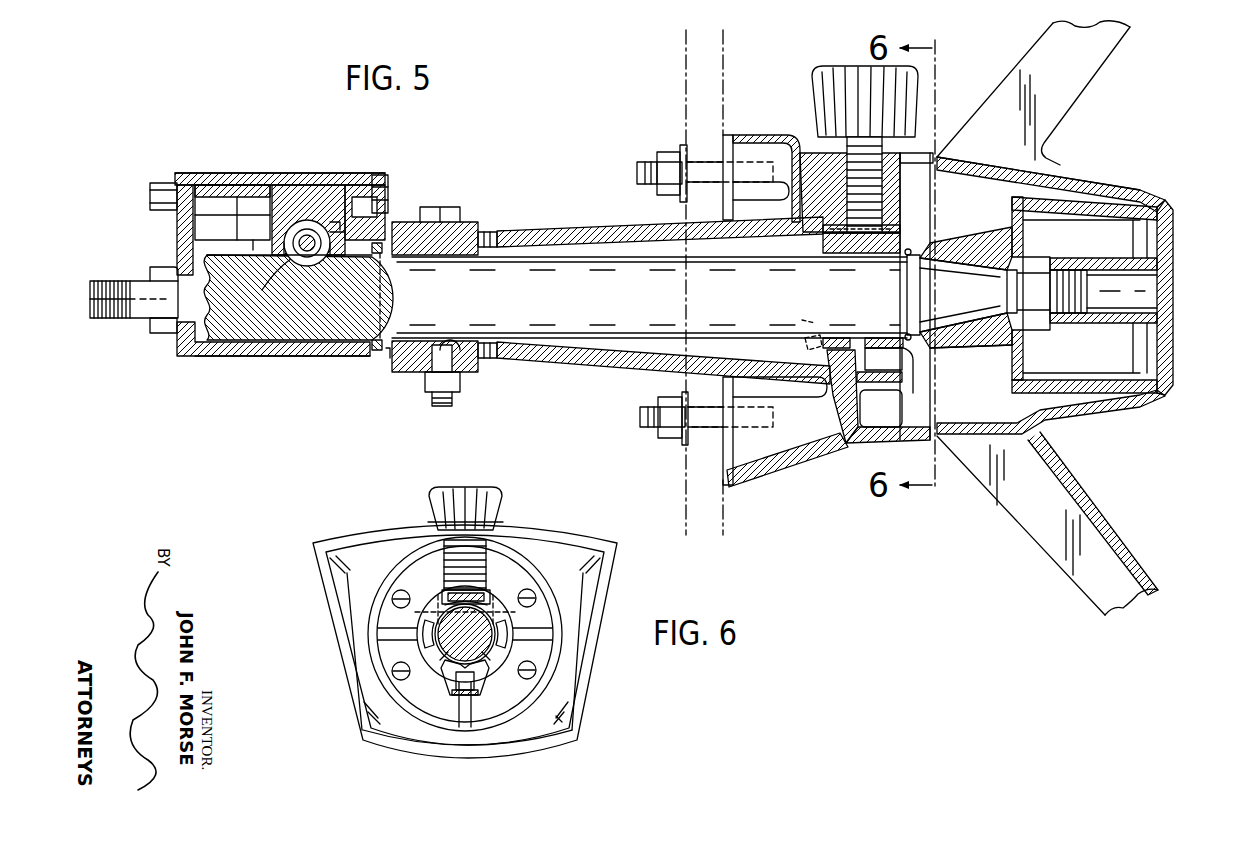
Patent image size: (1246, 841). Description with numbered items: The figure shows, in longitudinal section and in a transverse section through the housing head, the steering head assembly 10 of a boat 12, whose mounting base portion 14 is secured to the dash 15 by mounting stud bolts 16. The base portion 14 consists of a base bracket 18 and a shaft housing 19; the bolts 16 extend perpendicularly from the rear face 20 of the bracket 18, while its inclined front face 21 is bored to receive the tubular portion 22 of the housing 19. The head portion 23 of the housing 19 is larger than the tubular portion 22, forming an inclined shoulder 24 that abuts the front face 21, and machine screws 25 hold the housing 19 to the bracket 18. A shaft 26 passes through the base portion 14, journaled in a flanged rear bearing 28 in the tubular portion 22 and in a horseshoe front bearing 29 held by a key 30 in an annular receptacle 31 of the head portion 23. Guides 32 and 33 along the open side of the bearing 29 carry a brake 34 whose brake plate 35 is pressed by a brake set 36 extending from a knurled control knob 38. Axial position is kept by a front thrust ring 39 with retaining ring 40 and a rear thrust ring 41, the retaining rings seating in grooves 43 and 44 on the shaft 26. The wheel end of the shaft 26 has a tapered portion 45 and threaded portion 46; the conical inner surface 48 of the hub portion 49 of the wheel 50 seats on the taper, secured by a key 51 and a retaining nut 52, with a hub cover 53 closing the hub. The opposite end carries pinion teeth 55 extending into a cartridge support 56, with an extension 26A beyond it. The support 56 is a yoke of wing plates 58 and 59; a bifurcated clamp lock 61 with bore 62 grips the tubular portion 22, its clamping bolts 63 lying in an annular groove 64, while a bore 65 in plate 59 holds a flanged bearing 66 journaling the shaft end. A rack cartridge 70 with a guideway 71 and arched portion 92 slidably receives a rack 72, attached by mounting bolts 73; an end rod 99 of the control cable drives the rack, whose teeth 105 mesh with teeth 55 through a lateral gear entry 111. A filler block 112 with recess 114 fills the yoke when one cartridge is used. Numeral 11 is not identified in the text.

In FIG. 5, the steering head assembly 10 is at (1178, 98).
In FIG. 5, the steering/throttle housing 11 is at (176, 127).
In FIG. 5, the boat 12 is at (680, 57).
In FIG. 5, the mounting base portion 14 is at (812, 470).
In FIG. 6, the mounting base portion 14 is at (604, 735).
In FIG. 5, the dash 15 is at (724, 515).
In FIG. 5, the mounting stud bolts 16 is at (640, 170).
In FIG. 5, the base bracket 18 is at (748, 133).
In FIG. 6, the base bracket 18 is at (610, 590).
In FIG. 5, the shaft housing 19 is at (642, 372).
In FIG. 6, the shaft housing 19 is at (380, 700).
In FIG. 5, the rear face 20 is at (722, 462).
In FIG. 5, the front face 21 is at (856, 444).
In FIG. 6, the front face 21 is at (572, 686).
In FIG. 5, the tubular portion 22 is at (598, 230).
In FIG. 5, the head portion 23 is at (812, 158).
In FIG. 6, the head portion 23 is at (433, 733).
In FIG. 5, the shoulder 24 is at (788, 183).
In FIG. 5, the machine screws 25 is at (812, 337).
In FIG. 6, the machine screws 25 is at (533, 602).
In FIG. 5, the shaft 26 is at (563, 273).
In FIG. 6, the shaft 26 is at (458, 656).
In FIG. 5, the extension 26A is at (122, 320).
In FIG. 5, the rear bearing 28 is at (478, 238).
In FIG. 5, the front bearing 29 is at (840, 375).
In FIG. 6, the front bearing 29 is at (412, 644).
In FIG. 5, the key 30 is at (878, 370).
In FIG. 6, the key 30 is at (478, 692).
In FIG. 6, the annular receptacle 31 is at (512, 640).
In FIG. 6, the guide 32 is at (530, 552).
In FIG. 6, the guide 33 is at (430, 612).
In FIG. 5, the brake 34 is at (861, 252).
In FIG. 6, the brake 34 is at (440, 598).
In FIG. 5, the brake plate 35 is at (830, 237).
In FIG. 6, the brake plate 35 is at (486, 600).
In FIG. 5, the brake set 36 is at (878, 162).
In FIG. 6, the brake set 36 is at (462, 562).
In FIG. 5, the control knob 38 is at (836, 70).
In FIG. 6, the control knob 38 is at (430, 499).
In FIG. 5, the front thrust ring 39 is at (913, 376).
In FIG. 5, the retaining ring 40 is at (912, 342).
In FIG. 5, the rear thrust ring 41 is at (380, 355).
In FIG. 5, the annular groove 43 is at (922, 288).
In FIG. 5, the annular groove 44 is at (372, 352).
In FIG. 5, the tapered portion 45 is at (1000, 300).
In FIG. 5, the threaded portion 46 is at (1078, 312).
In FIG. 5, the conical inner surface 48 is at (978, 258).
In FIG. 5, the hub portion 49 is at (1088, 170).
In FIG. 5, the wheel 50 is at (1104, 615).
In FIG. 5, the key 51 is at (978, 338).
In FIG. 5, the retaining nut 52 is at (1040, 255).
In FIG. 5, the hub cover 53 is at (1173, 290).
In FIG. 5, the teeth 55 is at (235, 263).
In FIG. 5, the cartridge support 56 is at (277, 358).
In FIG. 5, the wing plate 58 is at (335, 240).
In FIG. 5, the wing plate 59 is at (178, 240).
In FIG. 5, the clamp lock 61 is at (462, 212).
In FIG. 5, the annular bore 62 is at (420, 368).
In FIG. 5, the clamping bolts 63 is at (460, 402).
In FIG. 5, the annular groove 64 is at (458, 350).
In FIG. 5, the bore 65 is at (162, 335).
In FIG. 5, the flanged bearing 66 is at (168, 270).
In FIG. 5, the rack cartridge 70 is at (330, 178).
In FIG. 5, the guideway 71 is at (345, 232).
In FIG. 5, the rack 72 is at (328, 224).
In FIG. 5, the mounting bolts 73 is at (160, 185).
In FIG. 5, the arched portion 92 is at (302, 208).
In FIG. 5, the end rod 99 is at (309, 250).
In FIG. 5, the teeth 105 is at (378, 260).
In FIG. 5, the lateral gear entry 111 is at (262, 283).
In FIG. 5, the filler block 112 is at (247, 170).
In FIG. 5, the recess 114 is at (258, 230).